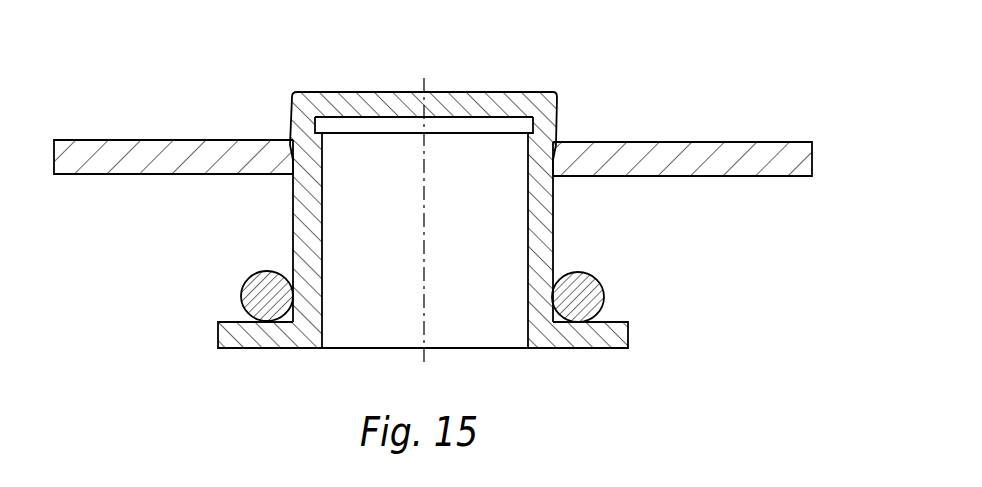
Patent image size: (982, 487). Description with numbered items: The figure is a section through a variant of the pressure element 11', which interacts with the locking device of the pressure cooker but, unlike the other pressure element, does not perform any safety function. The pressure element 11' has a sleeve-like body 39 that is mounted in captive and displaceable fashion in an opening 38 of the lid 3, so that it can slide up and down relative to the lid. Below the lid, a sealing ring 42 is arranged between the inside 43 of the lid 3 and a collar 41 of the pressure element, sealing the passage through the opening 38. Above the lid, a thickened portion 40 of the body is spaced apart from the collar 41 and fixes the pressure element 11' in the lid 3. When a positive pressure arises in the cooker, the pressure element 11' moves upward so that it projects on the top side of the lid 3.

The lid 3 is at (449, 170).
The pressure element 11' is at (458, 204).
The opening 38 is at (292, 142).
The sleeve-like body 39 is at (500, 92).
The thickened portion 40 is at (558, 116).
The collar 41 is at (458, 360).
The sealing ring 42 is at (596, 293).
The inside of the lid 43 is at (779, 180).